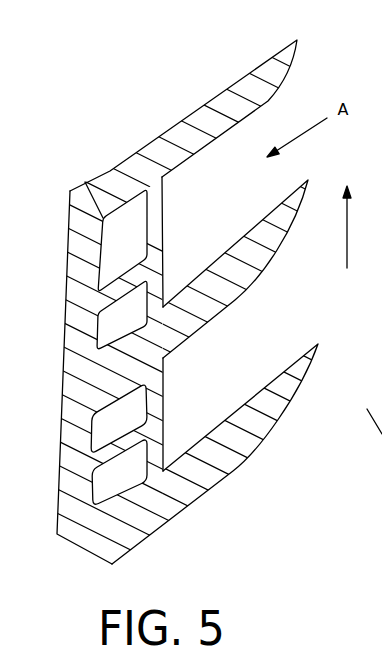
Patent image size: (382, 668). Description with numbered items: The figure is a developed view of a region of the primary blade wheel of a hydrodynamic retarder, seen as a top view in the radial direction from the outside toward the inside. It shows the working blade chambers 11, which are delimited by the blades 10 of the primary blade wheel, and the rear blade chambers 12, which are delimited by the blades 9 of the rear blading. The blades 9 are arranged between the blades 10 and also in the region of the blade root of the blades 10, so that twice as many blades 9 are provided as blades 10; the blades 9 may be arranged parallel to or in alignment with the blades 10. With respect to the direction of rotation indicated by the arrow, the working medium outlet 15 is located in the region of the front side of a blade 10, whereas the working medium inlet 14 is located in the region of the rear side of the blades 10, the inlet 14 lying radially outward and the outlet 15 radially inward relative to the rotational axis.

The blades of the rear blading 9 is at (110, 293).
The blades of the primary blade wheel 10 is at (222, 98).
The working blade chambers 11 is at (202, 220).
The rear blade chambers 12 is at (111, 237).
The working medium inlet 14 is at (103, 429).
The working medium outlet 15 is at (108, 492).